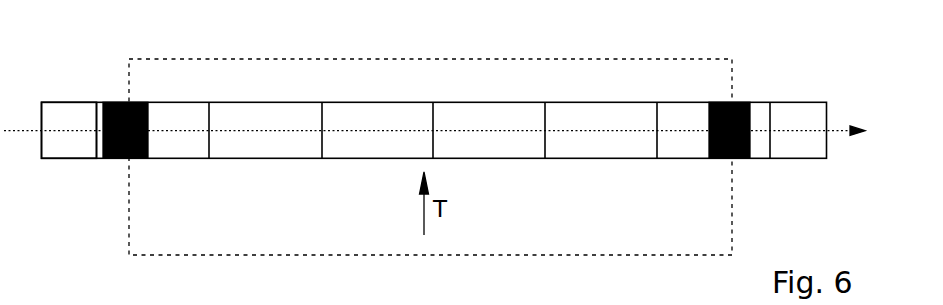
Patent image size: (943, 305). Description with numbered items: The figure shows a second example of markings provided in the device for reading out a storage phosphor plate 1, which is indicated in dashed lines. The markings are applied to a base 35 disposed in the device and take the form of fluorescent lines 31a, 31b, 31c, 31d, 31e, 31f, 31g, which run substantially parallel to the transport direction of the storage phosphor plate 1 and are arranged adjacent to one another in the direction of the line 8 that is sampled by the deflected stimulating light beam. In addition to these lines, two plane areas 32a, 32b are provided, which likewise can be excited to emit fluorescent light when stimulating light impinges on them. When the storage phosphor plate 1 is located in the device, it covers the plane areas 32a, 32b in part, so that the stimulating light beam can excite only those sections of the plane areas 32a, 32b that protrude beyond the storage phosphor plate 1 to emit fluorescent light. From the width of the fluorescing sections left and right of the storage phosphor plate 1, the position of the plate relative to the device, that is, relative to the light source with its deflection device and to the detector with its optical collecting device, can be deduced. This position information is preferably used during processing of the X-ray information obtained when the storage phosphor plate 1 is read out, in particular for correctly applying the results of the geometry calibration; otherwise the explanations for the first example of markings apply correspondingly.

The storage phosphor plate 1 is at (690, 236).
The line sampled by the deflected stimulating light beam 8 is at (806, 131).
The fluorescent line 31a is at (96, 102).
The fluorescent line 31b is at (209, 102).
The fluorescent line 31c is at (322, 102).
The fluorescent line 31d is at (433, 102).
The fluorescent line 31e is at (545, 102).
The fluorescent line 31f is at (657, 102).
The fluorescent line 31g is at (770, 102).
The plane area 32a is at (122, 158).
The plane area 32b is at (738, 158).
The base 35 is at (77, 158).